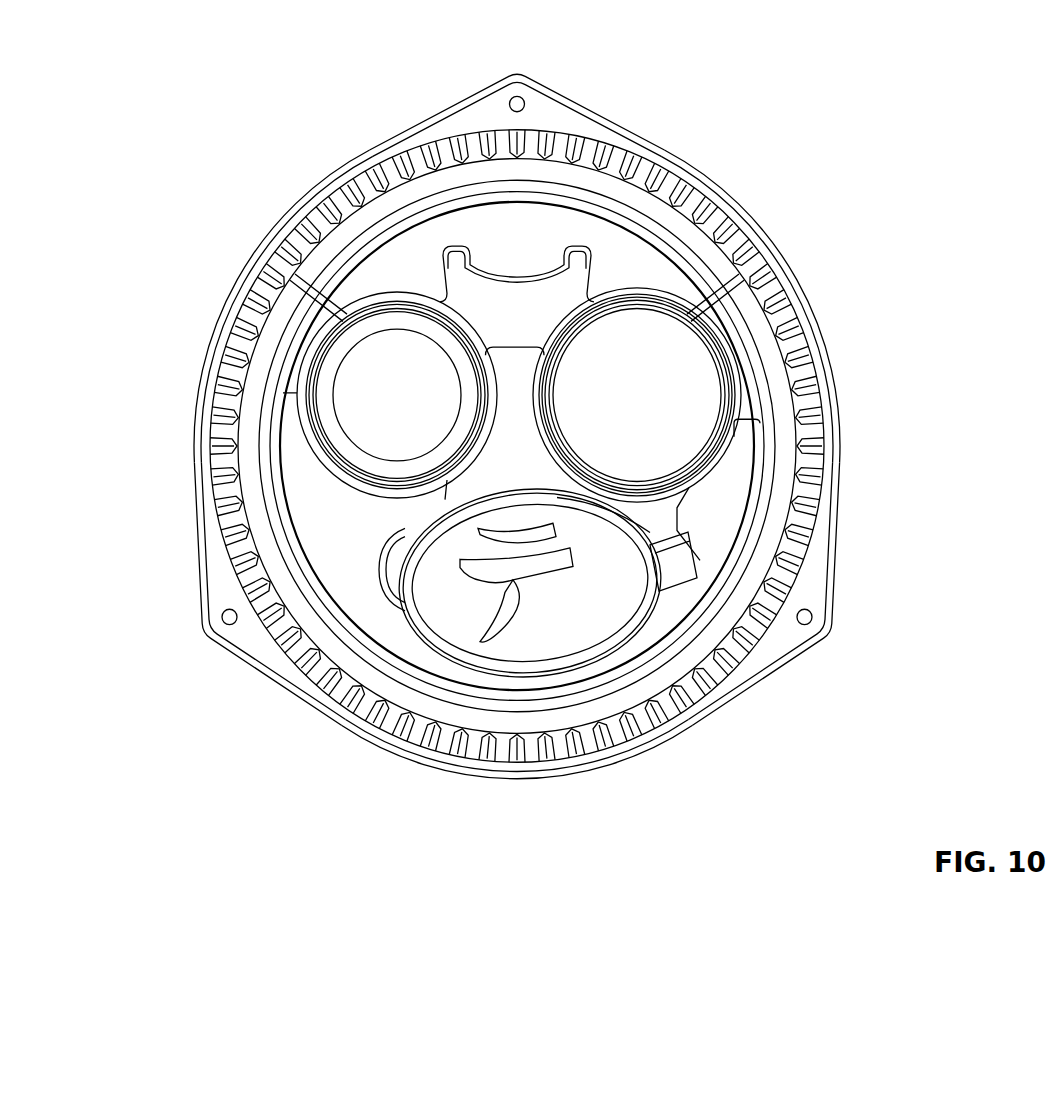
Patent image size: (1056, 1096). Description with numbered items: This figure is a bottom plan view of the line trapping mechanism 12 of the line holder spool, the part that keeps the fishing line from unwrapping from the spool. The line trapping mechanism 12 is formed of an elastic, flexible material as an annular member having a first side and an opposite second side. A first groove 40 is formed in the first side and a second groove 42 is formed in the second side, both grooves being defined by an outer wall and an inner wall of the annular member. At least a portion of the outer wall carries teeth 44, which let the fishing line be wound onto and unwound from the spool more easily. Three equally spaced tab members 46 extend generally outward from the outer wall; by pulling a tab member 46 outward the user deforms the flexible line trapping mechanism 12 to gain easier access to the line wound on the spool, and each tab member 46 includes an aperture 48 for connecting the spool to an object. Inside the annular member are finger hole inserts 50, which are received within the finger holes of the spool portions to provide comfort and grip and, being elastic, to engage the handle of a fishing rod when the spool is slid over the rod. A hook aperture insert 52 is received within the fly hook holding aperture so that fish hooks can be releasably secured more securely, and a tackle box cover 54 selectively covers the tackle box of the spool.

The line trapping mechanism 12 is at (523, 436).
The first groove 40 is at (566, 100).
The second groove 42 is at (770, 353).
The teeth 44 is at (680, 180).
The tab member 46 is at (830, 583).
The aperture 48 is at (507, 103).
The finger hole inserts 50 is at (335, 352).
The hook aperture insert 52 is at (455, 258).
The tackle box cover 54 is at (605, 612).